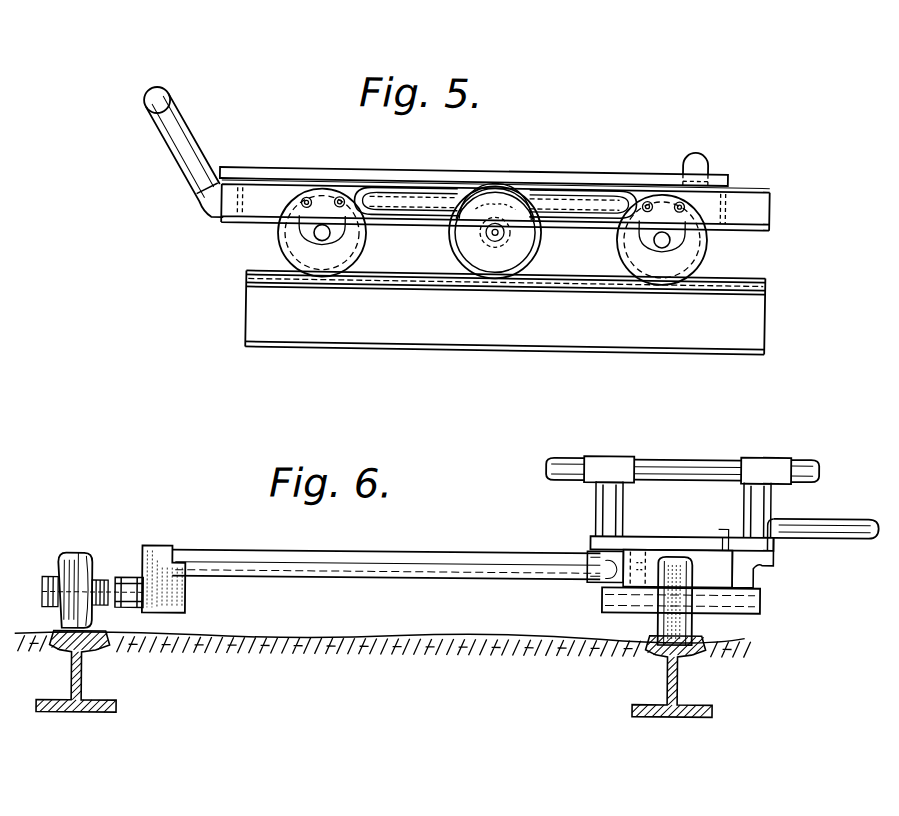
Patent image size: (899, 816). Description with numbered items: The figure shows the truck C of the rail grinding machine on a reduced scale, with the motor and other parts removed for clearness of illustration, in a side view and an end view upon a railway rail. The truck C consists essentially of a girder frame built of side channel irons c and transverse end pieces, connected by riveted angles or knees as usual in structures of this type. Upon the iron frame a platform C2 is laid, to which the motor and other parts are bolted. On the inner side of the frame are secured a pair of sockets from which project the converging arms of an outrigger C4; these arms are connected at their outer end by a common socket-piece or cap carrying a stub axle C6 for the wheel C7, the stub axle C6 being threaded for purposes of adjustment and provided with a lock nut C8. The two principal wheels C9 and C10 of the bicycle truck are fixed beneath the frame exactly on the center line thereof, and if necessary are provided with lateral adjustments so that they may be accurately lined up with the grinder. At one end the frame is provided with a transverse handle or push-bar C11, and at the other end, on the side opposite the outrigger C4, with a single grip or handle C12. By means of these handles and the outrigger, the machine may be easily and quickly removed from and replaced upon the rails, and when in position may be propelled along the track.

In FIG. 5, the truck C is at (495, 178).
In FIG. 6, the truck C is at (680, 547).
In FIG. 5, the side channel irons c is at (746, 207).
In FIG. 5, the platform C2 is at (457, 179).
In FIG. 5, the outrigger C4 is at (406, 218).
In FIG. 6, the outrigger C4 is at (279, 550).
In FIG. 6, the stub axle C6 is at (107, 578).
In FIG. 5, the wheel C7 is at (494, 231).
In FIG. 6, the wheel C7 is at (94, 574).
In FIG. 6, the lock nut C8 is at (133, 578).
In FIG. 5, the principal wheel C9 is at (321, 232).
In FIG. 5, the principal wheel C10 is at (661, 239).
In FIG. 6, the principal wheel C10 is at (657, 620).
In FIG. 5, the transverse handle or push-bar C11 is at (147, 110).
In FIG. 6, the transverse handle or push-bar C11 is at (672, 450).
In FIG. 5, the single grip or handle C12 is at (698, 155).
In FIG. 6, the single grip or handle C12 is at (821, 516).